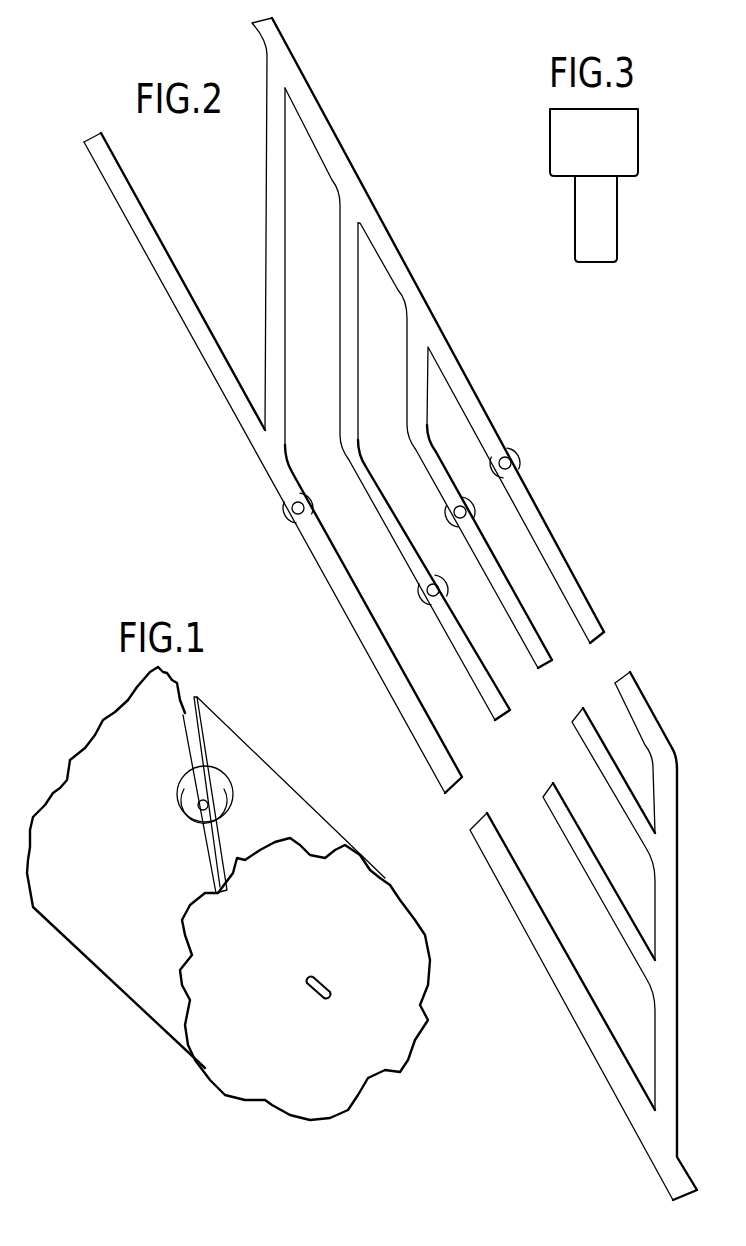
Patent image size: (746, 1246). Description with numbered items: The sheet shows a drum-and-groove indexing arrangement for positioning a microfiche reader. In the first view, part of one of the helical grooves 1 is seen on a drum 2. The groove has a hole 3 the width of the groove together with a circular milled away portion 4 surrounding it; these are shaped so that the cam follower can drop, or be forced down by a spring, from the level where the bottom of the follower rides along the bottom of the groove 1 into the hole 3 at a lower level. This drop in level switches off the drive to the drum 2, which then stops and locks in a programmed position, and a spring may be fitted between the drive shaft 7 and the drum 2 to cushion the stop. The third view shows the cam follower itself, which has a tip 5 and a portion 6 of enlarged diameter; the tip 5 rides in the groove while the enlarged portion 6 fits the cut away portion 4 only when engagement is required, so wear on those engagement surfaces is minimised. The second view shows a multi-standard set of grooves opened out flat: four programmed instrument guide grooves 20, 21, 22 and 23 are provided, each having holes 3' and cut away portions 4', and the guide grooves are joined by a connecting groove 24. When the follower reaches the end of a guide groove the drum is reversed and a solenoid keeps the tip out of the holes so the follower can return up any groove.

In FIG. 1, the groove 1 is at (220, 903).
In FIG. 1, the drum 2 is at (348, 932).
In FIG. 1, the hole 3 is at (243, 766).
In FIG. 1, the circular milled away portion 4 is at (222, 794).
In FIG. 3, the tip 5 is at (603, 263).
In FIG. 3, the portion of enlarged diameter 6 is at (550, 143).
In FIG. 1, the drive shaft 7 is at (320, 978).
In FIG. 2, the programmed instrument guide groove 20 is at (324, 570).
In FIG. 2, the programmed instrument guide groove 21 is at (378, 514).
In FIG. 2, the programmed instrument guide groove 22 is at (508, 603).
In FIG. 2, the programmed instrument guide groove 23 is at (553, 531).
In FIG. 2, the groove 24 is at (678, 888).
In FIG. 2, the hole 3' is at (427, 552).
In FIG. 2, the cut away portion 4' is at (398, 503).